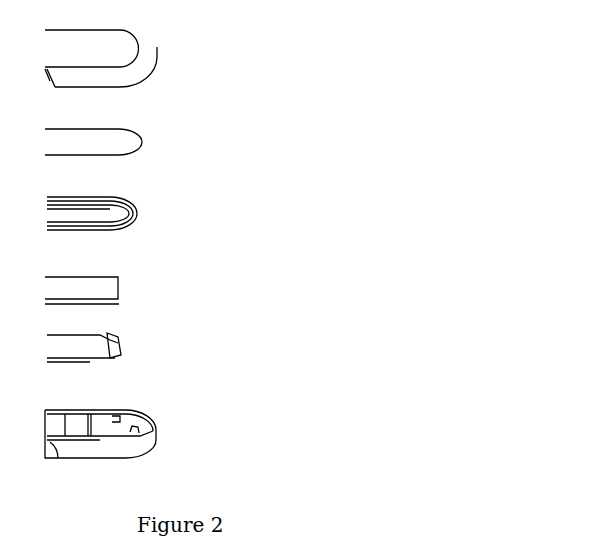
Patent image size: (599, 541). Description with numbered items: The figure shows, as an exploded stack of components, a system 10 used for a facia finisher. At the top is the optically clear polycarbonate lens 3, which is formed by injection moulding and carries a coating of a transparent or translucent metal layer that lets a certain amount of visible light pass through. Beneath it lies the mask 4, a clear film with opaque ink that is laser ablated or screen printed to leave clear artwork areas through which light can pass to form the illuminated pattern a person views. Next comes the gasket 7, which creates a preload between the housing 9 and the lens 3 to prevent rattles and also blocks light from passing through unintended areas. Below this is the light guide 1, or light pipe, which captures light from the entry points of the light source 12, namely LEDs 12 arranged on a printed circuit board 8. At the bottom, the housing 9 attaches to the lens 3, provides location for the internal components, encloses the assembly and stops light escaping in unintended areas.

The system 10 is at (377, 131).
The lens 3 is at (167, 49).
The mask 4 is at (152, 141).
The gasket 7 is at (158, 210).
The light guide 1 is at (148, 280).
The printed circuit board 8 is at (149, 350).
The light source 12 is at (113, 348).
The housing 9 is at (175, 421).